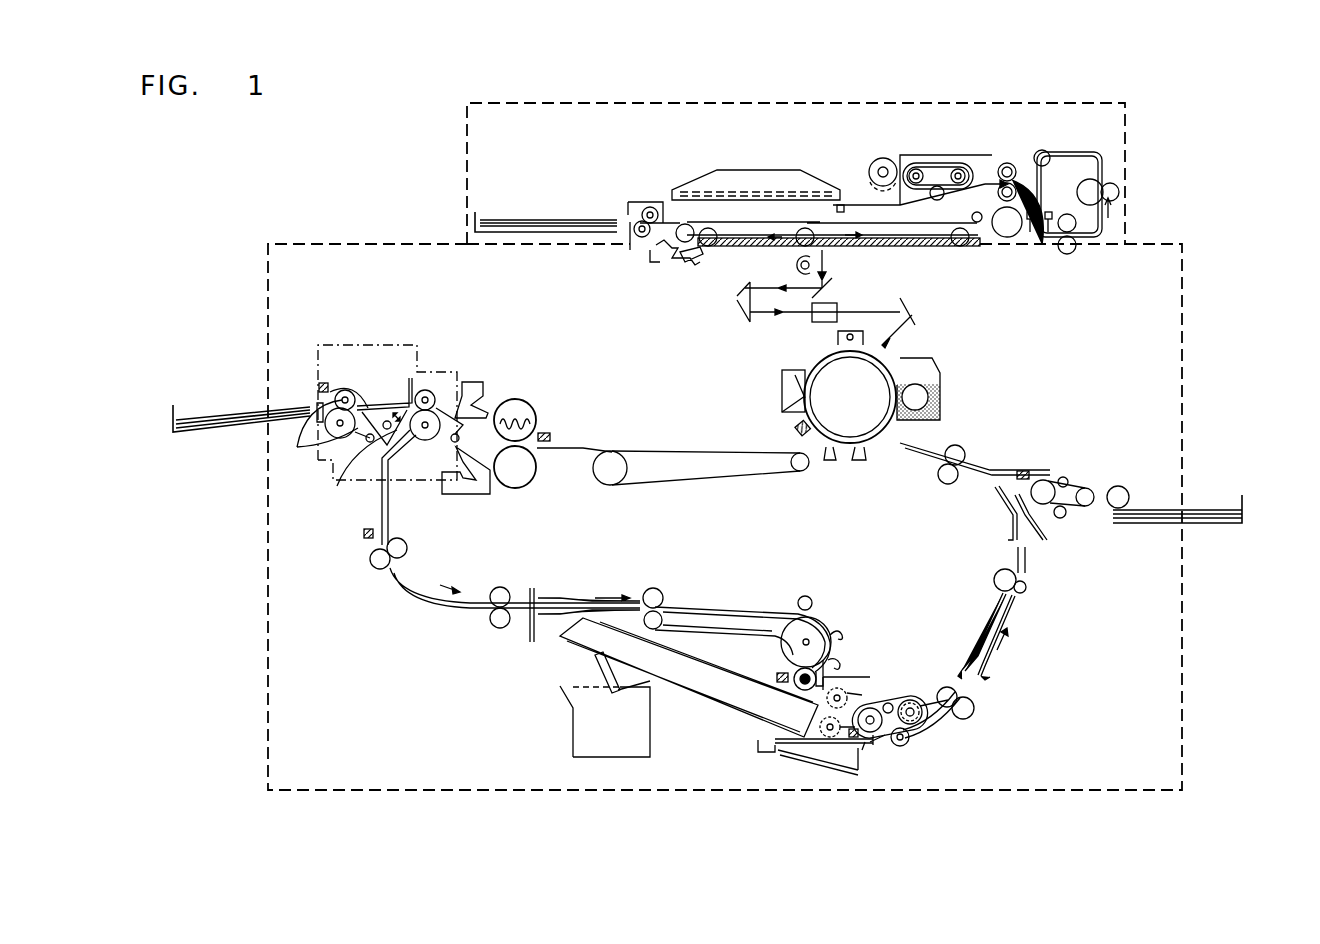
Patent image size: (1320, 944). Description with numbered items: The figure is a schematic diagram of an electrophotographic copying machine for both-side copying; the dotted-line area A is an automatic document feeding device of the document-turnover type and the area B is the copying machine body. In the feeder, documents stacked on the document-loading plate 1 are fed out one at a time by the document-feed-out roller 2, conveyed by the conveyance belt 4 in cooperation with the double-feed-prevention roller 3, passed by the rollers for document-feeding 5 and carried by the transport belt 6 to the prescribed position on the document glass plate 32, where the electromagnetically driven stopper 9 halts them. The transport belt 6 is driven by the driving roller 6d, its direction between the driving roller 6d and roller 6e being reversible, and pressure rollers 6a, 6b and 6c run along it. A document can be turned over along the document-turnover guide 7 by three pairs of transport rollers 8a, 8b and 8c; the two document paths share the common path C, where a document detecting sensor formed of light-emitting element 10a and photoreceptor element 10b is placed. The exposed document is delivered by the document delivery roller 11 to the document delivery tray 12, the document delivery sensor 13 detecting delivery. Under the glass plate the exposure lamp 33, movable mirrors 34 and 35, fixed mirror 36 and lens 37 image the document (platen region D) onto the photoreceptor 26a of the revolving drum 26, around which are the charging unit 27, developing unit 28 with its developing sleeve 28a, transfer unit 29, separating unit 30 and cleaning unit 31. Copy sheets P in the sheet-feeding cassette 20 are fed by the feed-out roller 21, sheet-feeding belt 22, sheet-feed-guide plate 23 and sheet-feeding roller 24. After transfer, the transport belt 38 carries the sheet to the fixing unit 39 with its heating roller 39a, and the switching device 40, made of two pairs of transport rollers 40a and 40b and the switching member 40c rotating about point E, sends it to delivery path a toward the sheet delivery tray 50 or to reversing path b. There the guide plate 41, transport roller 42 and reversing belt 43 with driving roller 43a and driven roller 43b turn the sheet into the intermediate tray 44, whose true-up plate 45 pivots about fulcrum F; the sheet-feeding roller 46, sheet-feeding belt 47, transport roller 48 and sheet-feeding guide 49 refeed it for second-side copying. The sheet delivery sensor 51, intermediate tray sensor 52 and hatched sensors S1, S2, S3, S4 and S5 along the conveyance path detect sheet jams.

The document-loading plate 1 is at (750, 205).
The document-feed-out roller 2 is at (883, 158).
The double-feed-prevention roller 3 is at (930, 198).
The conveyance belt 4 is at (940, 162).
The rollers for document-feeding 5 is at (1008, 163).
The transport belt 6 is at (815, 228).
The pressure roller 6a is at (963, 247).
The pressure roller 6b is at (815, 242).
The pressure roller 6c is at (710, 247).
The driving roller 6d is at (1000, 215).
The roller 6e is at (680, 225).
The document-turnover guide 7 is at (1090, 157).
The transport rollers 8a is at (1075, 235).
The transport rollers 8b is at (1098, 185).
The transport rollers 8c is at (1050, 160).
The stopper 9 is at (695, 262).
The light-emitting element 10a is at (1030, 232).
The photoreceptor element 10b is at (1048, 232).
The document delivery roller 11 is at (647, 206).
The document delivery tray 12 is at (530, 232).
The document delivery sensor 13 is at (656, 262).
The sheet-feeding cassette 20 is at (1212, 525).
The feed-out roller 21 is at (1118, 486).
The sheet-feeding belt 22 is at (1070, 515).
The sheet-feed-guide plate 23 is at (995, 468).
The sheet-feeding roller 24 is at (955, 445).
The revolving drum 26 is at (867, 396).
The photoreceptor 26a is at (852, 440).
The charging unit 27 is at (835, 338).
The developing unit 28 is at (942, 362).
The developing sleeve 28a is at (928, 396).
The transfer unit 29 is at (860, 463).
The separating unit 30 is at (828, 463).
The cleaning unit 31 is at (781, 386).
The document glass plate 32 is at (922, 247).
The exposure lamp 33 is at (800, 266).
The movable mirror 34 is at (830, 286).
The movable mirror 35 is at (745, 312).
The fixed mirror 36 is at (918, 305).
The lens 37 is at (815, 324).
The transport belt 38 is at (706, 450).
The fixing unit 39 is at (540, 405).
The heating roller 39a is at (510, 405).
The switching device 40 is at (380, 345).
The transport rollers 40a is at (440, 398).
The transport rollers 40b is at (336, 428).
The switching member 40c is at (360, 382).
The guide plate 41 is at (388, 510).
The transport roller 42 is at (405, 548).
The reversing belt 43 is at (745, 605).
The driving roller 43a is at (803, 628).
The driven roller 43b is at (660, 605).
The intermediate tray 44 is at (700, 680).
The true-up plate 45 is at (860, 762).
The sheet-feeding roller 46 is at (790, 746).
The sheet-feeding belt 47 is at (896, 705).
The transport roller 48 is at (945, 688).
The sheet-feeding guide 49 is at (994, 612).
The sheet delivery tray 50 is at (198, 430).
The sheet delivery sensor 51 is at (318, 386).
The intermediate tray sensor 52 is at (778, 673).
The automatic document feeding device A is at (478, 150).
The copying machine body B is at (358, 250).
The common path C is at (1084, 198).
The original platen D is at (700, 188).
The point E is at (361, 472).
The fulcrum F is at (757, 750).
The copy sheet P is at (1152, 510).
The delivery path a is at (384, 388).
The reversing path b is at (406, 487).
The sensor S1 is at (1025, 470).
The sensor S2 is at (795, 428).
The sensor S3 is at (552, 436).
The sensor S4 is at (362, 533).
The sensor S5 is at (878, 745).